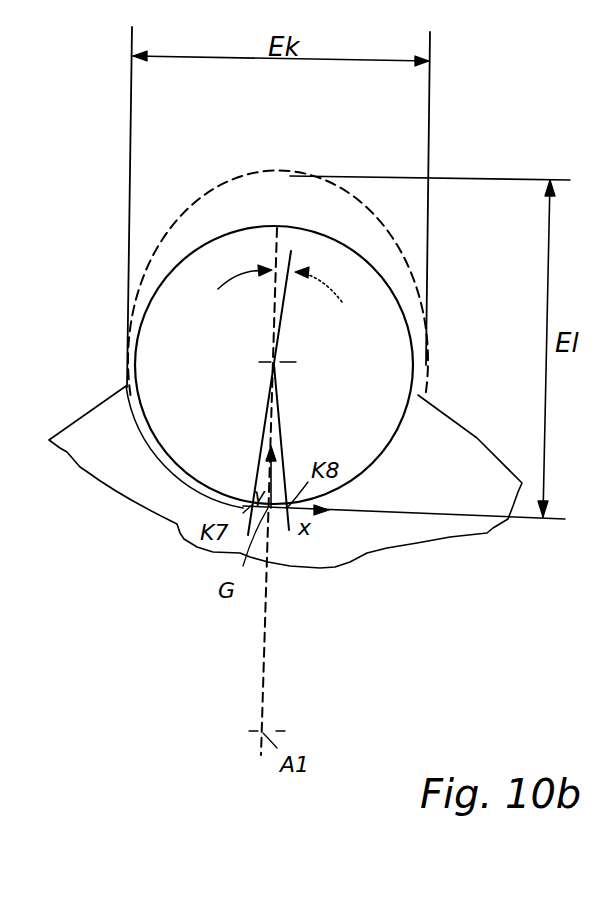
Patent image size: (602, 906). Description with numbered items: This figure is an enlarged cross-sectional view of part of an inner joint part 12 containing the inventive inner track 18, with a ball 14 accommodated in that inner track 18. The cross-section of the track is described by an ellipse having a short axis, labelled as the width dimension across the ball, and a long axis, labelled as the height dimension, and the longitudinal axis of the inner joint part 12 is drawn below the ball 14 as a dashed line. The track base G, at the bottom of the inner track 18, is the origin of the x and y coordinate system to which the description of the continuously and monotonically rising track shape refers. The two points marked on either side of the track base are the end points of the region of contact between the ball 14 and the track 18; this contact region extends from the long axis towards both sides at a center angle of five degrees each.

The inner joint part 12 is at (472, 447).
The ball 14 is at (397, 323).
The inner track 18 is at (420, 390).